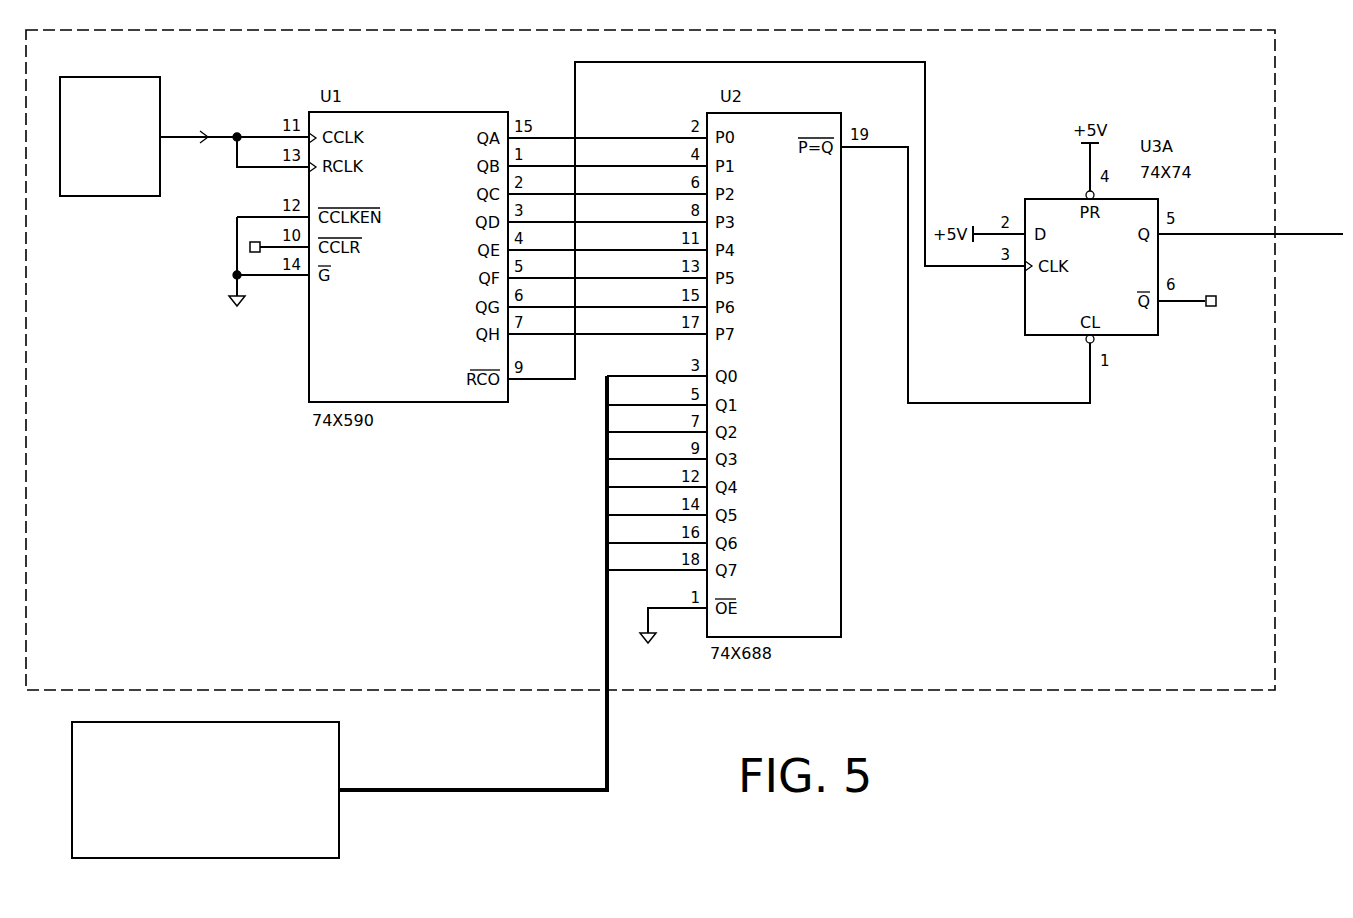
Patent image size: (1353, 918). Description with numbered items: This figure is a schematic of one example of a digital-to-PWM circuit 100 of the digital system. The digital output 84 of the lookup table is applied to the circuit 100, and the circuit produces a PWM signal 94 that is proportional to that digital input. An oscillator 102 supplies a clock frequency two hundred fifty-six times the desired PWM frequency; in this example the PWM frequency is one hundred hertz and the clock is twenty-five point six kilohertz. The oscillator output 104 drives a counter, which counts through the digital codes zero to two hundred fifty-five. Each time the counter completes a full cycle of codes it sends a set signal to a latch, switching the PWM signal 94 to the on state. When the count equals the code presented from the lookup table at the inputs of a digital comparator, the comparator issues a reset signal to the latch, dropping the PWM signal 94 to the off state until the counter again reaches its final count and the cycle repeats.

The digital-to-PWM circuit 100 is at (1133, 690).
The oscillator 102 is at (108, 197).
The oscillator output 104 is at (187, 136).
The PWM signal 94 is at (1305, 232).
The digital output 84 is at (339, 741).